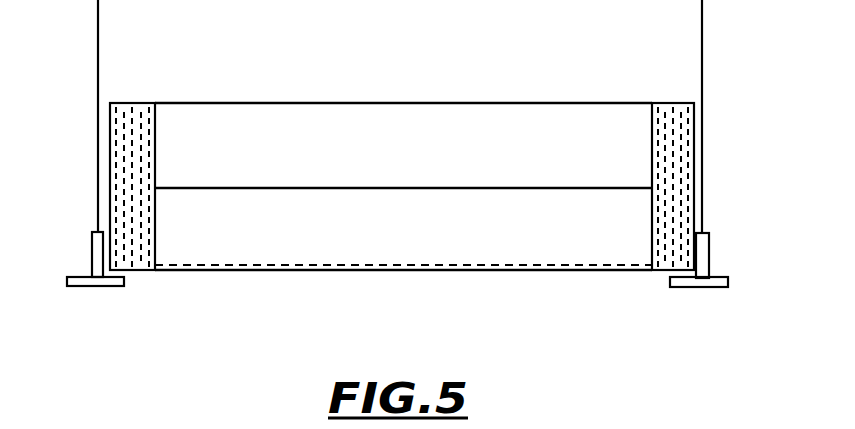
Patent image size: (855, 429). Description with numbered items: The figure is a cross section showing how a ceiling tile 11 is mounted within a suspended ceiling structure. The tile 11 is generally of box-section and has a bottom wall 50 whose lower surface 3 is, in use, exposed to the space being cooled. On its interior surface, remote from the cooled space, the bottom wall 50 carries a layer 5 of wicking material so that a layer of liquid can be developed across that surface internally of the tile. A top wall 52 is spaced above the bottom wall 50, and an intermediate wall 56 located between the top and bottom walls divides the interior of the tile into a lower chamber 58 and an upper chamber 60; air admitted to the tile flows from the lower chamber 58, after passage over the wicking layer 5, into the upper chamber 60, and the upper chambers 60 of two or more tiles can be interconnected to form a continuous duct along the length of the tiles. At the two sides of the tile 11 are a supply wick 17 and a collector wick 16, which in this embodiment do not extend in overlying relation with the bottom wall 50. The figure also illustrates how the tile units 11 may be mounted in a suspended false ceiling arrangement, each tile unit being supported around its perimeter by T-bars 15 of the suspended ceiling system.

The tile 11 is at (440, 81).
The T-bars 15 is at (80, 287).
The supply wick 17 is at (115, 161).
The collector wick 16 is at (678, 165).
The top wall 52 is at (580, 103).
The intermediate wall 56 is at (580, 188).
The upper chamber 60 is at (403, 145).
The lower chamber 58 is at (403, 226).
The wicking layer 5 is at (252, 263).
The lower surface 3 is at (313, 272).
The bottom wall 50 is at (473, 272).